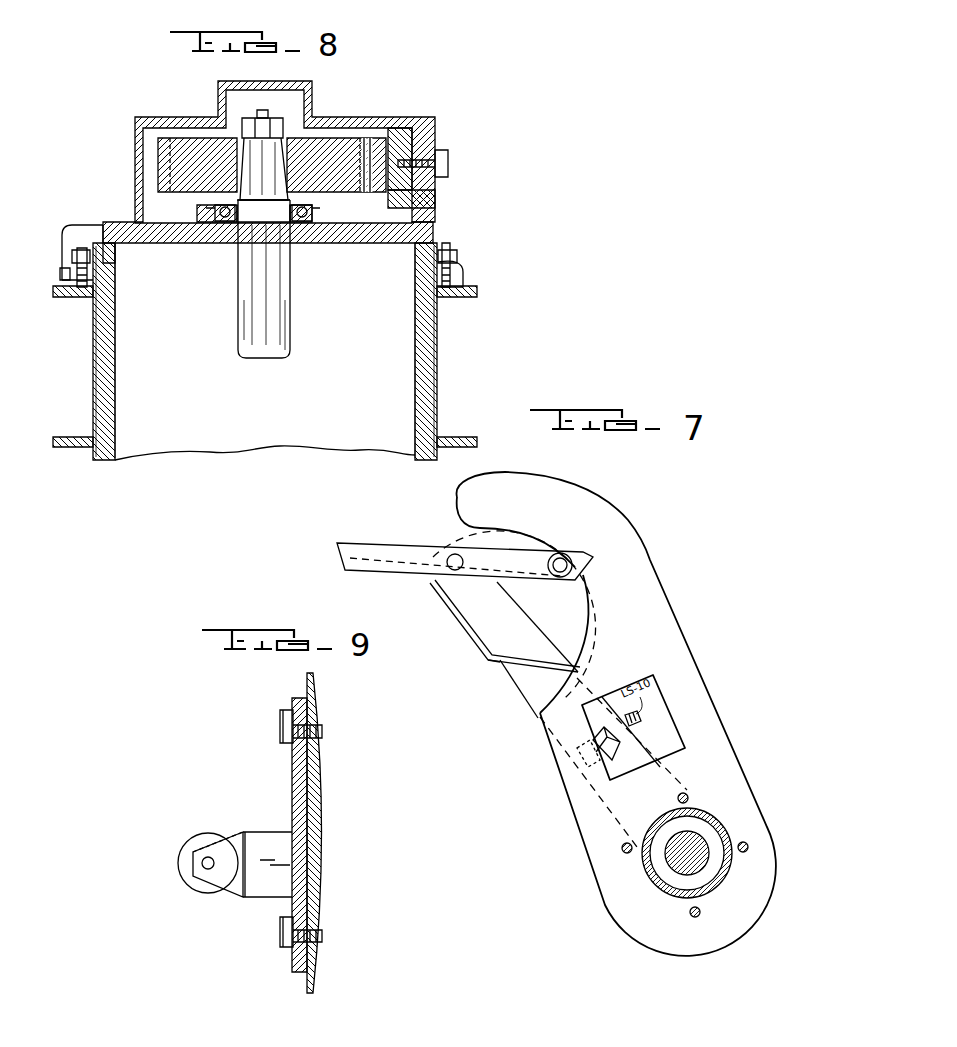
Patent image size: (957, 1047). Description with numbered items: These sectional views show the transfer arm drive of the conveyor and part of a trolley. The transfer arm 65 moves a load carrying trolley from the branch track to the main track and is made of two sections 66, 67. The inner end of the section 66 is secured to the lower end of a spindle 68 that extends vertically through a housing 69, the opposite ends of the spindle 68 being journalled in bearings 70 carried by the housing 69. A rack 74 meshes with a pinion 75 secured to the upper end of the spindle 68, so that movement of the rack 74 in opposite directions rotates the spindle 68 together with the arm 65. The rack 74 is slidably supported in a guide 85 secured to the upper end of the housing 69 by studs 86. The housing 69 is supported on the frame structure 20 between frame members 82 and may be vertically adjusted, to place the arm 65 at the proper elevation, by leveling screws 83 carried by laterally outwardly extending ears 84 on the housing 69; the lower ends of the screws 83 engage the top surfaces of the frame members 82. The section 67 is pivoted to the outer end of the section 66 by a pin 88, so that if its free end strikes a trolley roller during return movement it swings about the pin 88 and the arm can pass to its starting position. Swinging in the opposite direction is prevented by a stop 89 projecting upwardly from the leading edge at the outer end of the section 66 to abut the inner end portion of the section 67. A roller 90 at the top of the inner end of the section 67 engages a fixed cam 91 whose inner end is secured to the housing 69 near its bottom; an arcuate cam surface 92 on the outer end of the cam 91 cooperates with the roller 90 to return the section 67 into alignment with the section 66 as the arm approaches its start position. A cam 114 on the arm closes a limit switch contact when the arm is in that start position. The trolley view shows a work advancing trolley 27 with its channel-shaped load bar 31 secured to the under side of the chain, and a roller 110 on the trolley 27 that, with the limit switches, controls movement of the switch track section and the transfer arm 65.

In FIG. 8, the frame structure 20 is at (457, 328).
In FIG. 8, the spindle 68 is at (252, 325).
In FIG. 7, the spindle 68 is at (675, 867).
In FIG. 8, the housing 69 is at (418, 360).
In FIG. 7, the housing 69 is at (703, 832).
In FIG. 8, the bearings 70 is at (232, 224).
In FIG. 8, the rack 74 is at (395, 137).
In FIG. 8, the pinion 75 is at (333, 150).
In FIG. 8, the frame members 82 is at (95, 380).
In FIG. 8, the leveling screws 83 is at (80, 250).
In FIG. 8, the ears 84 is at (66, 265).
In FIG. 8, the guide 85 is at (408, 200).
In FIG. 8, the studs 86 is at (445, 165).
In FIG. 7, the transfer arm 65 is at (396, 588).
In FIG. 7, the section 66 is at (527, 628).
In FIG. 7, the section 67 is at (387, 553).
In FIG. 7, the pin 88 is at (451, 556).
In FIG. 7, the stop 89 is at (487, 665).
In FIG. 7, the roller 90 is at (563, 555).
In FIG. 7, the fixed cam 91 is at (647, 548).
In FIG. 7, the arcuate cam surface 92 is at (598, 600).
In FIG. 7, the cam 114 is at (604, 752).
In FIG. 9, the work advancing trolley 27 is at (341, 773).
In FIG. 9, the load bar 31 is at (318, 832).
In FIG. 9, the roller 110 is at (207, 890).